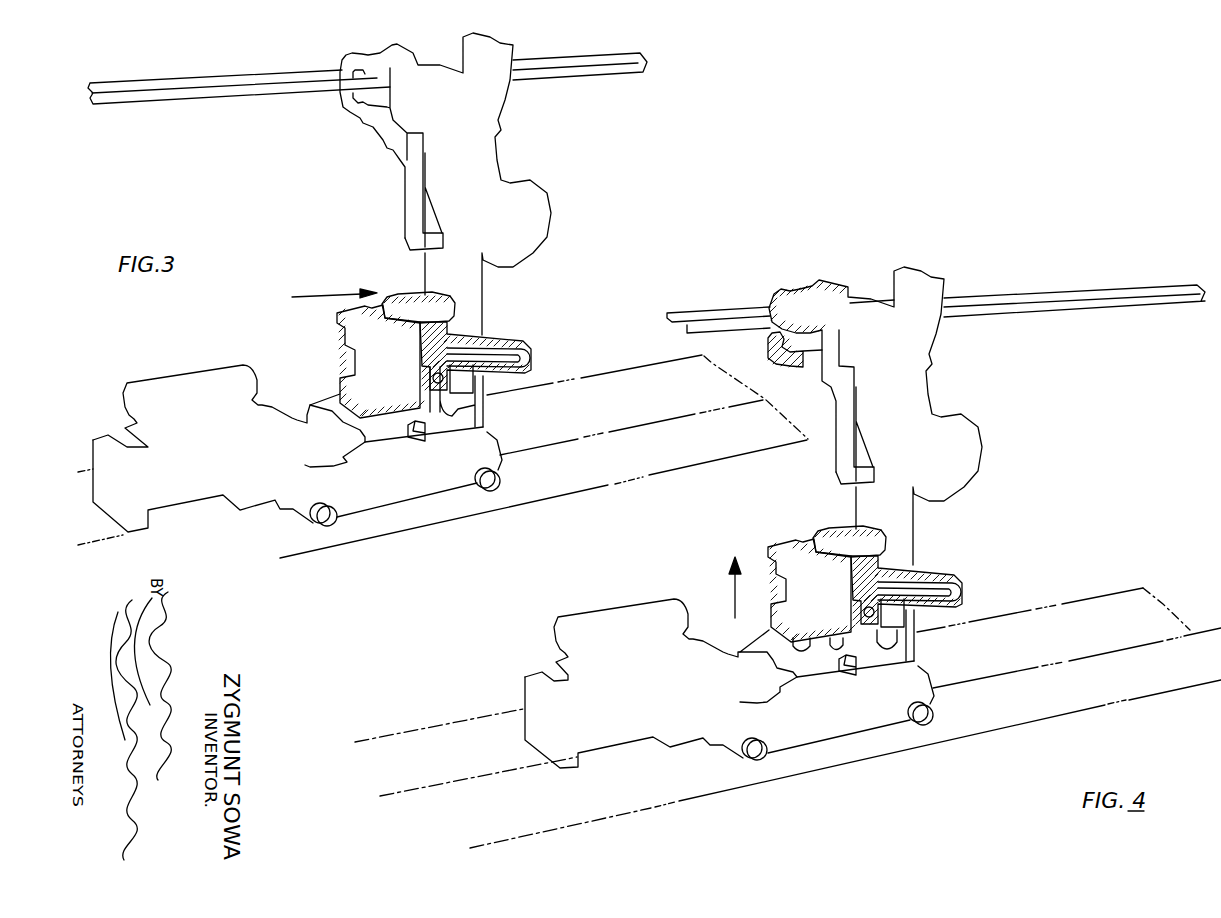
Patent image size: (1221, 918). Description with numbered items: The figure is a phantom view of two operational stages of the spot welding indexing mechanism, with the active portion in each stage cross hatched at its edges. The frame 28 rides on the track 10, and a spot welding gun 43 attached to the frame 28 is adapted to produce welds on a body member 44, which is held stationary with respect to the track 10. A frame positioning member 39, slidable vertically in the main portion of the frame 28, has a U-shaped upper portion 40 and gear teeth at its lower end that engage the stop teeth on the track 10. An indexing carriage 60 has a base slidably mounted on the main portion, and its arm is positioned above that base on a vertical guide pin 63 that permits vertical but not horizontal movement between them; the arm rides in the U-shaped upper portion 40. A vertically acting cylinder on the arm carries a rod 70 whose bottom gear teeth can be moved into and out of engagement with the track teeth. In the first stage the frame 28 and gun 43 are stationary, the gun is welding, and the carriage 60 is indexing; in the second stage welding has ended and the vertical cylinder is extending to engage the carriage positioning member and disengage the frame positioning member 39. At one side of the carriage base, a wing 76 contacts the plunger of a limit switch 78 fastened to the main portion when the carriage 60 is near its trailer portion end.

In FIG. 3, the track 10 is at (611, 500).
In FIG. 3, the frame 28 is at (410, 499).
In FIG. 4, the frame 28 is at (729, 695).
In FIG. 3, the frame positioning member 39 is at (456, 396).
In FIG. 4, the frame positioning member 39 is at (889, 631).
In FIG. 4, the U-shaped upper portion 40 is at (1005, 740).
In FIG. 3, the spot welding gun 43 is at (528, 150).
In FIG. 4, the spot welding gun 43 is at (887, 416).
In FIG. 3, the body member 44 is at (262, 90).
In FIG. 4, the body member 44 is at (1033, 298).
In FIG. 3, the indexing carriage 60 is at (418, 290).
In FIG. 4, the indexing carriage 60 is at (865, 567).
In FIG. 4, the vertical guide pin 63 is at (848, 650).
In FIG. 4, the rod 70 is at (810, 657).
In FIG. 3, the wing 76 is at (426, 439).
In FIG. 4, the wing 76 is at (868, 679).
In FIG. 3, the limit switch 78 is at (330, 452).
In FIG. 4, the limit switch 78 is at (768, 666).